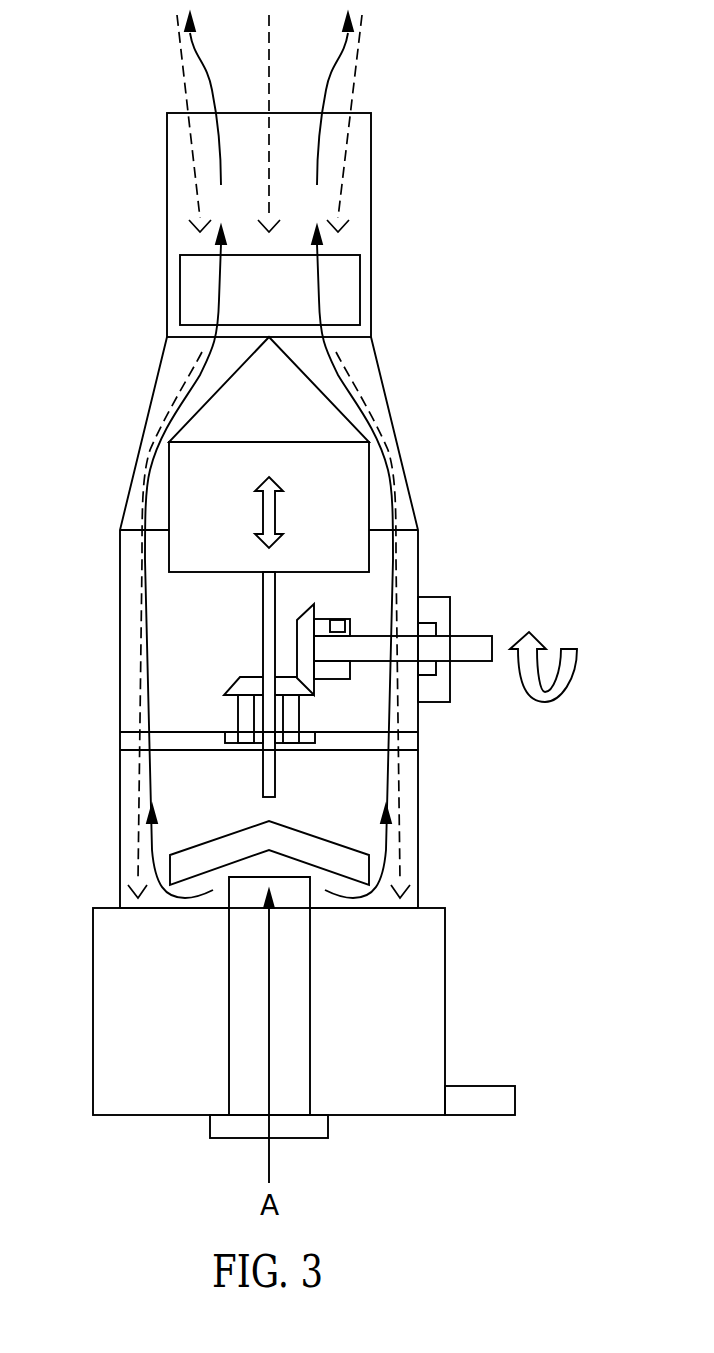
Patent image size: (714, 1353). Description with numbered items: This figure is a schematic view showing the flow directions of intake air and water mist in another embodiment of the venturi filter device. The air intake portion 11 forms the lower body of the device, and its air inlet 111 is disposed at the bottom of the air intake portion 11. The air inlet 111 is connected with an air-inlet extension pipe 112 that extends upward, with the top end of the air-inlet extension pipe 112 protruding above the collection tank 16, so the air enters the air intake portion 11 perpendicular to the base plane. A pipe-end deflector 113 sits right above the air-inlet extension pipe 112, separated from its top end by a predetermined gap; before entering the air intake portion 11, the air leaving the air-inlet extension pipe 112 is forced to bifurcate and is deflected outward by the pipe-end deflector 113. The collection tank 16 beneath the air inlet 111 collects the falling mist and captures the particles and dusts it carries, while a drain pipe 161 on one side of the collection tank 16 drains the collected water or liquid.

The air intake portion 11 is at (120, 795).
The air inlet 111 is at (297, 1140).
The air-inlet extension pipe 112 is at (235, 998).
The pipe-end deflector 113 is at (298, 835).
The collection tank 16 is at (430, 998).
The drain pipe 161 is at (508, 1100).